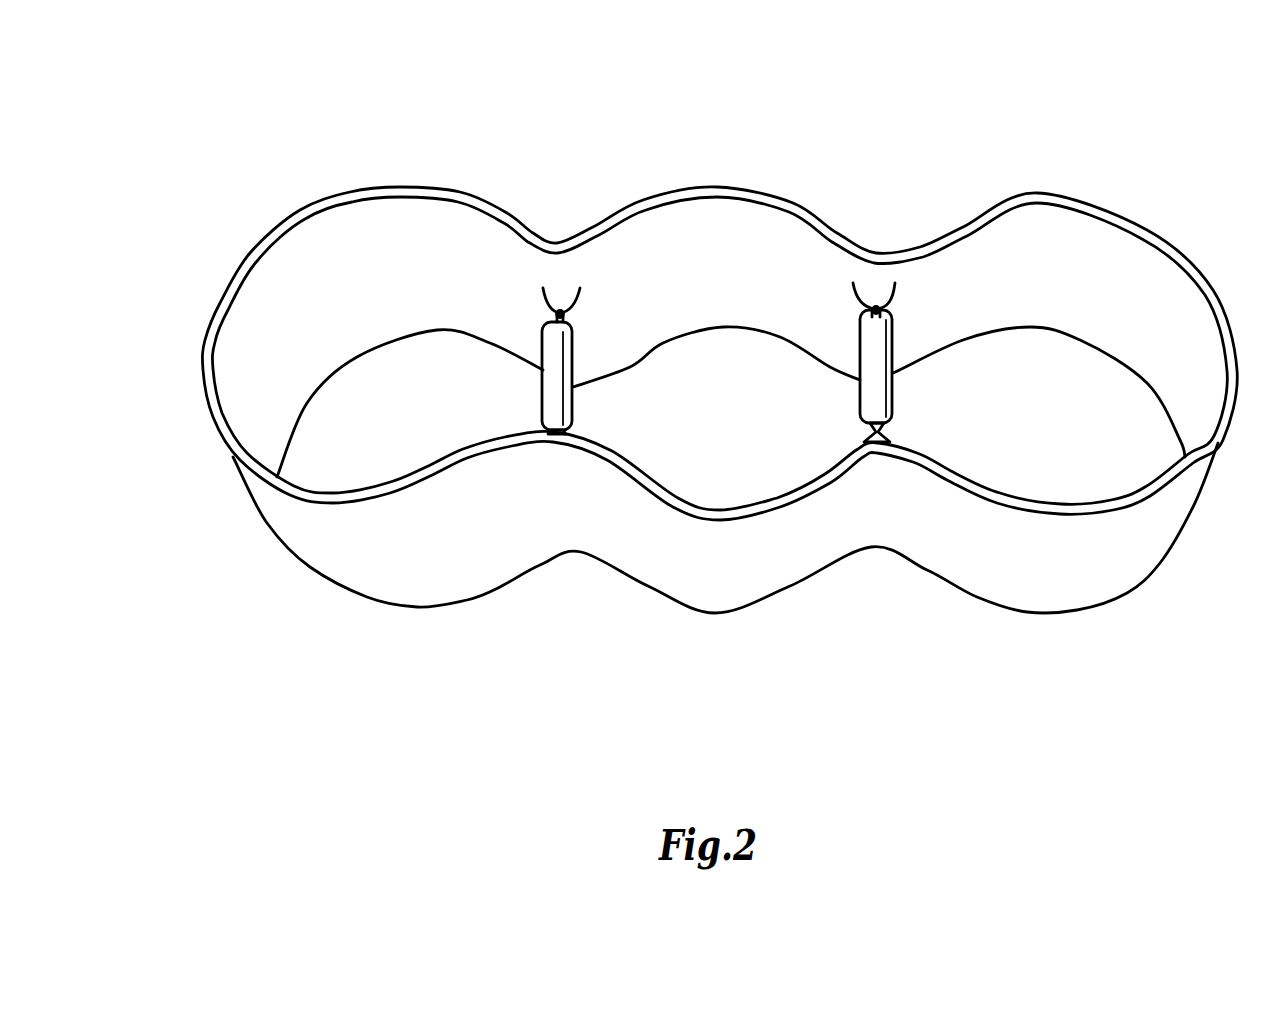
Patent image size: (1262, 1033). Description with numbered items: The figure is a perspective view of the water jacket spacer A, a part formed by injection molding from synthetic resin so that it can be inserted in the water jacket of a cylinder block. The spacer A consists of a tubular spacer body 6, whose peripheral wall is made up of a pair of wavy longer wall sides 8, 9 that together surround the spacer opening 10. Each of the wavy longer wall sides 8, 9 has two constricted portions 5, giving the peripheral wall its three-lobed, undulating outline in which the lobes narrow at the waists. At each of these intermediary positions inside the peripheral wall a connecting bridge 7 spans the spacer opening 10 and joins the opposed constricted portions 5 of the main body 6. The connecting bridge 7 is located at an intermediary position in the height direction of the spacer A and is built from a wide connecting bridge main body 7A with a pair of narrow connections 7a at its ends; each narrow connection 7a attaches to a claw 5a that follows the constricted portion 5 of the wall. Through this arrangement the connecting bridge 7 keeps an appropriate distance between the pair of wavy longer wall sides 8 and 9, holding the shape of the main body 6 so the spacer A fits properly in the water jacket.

The spacer opening 10 is at (409, 241).
The water jacket spacer A is at (1039, 176).
The tubular spacer body 6 is at (1128, 255).
The wavy longer wall side 8 is at (730, 586).
The constricted portion 5 is at (546, 510).
The wavy longer wall side 9 is at (730, 307).
The connecting bridge 7 is at (538, 383).
The connecting bridge main body 7A is at (563, 390).
The claw 5a is at (543, 289).
The narrow connection 7a is at (567, 313).